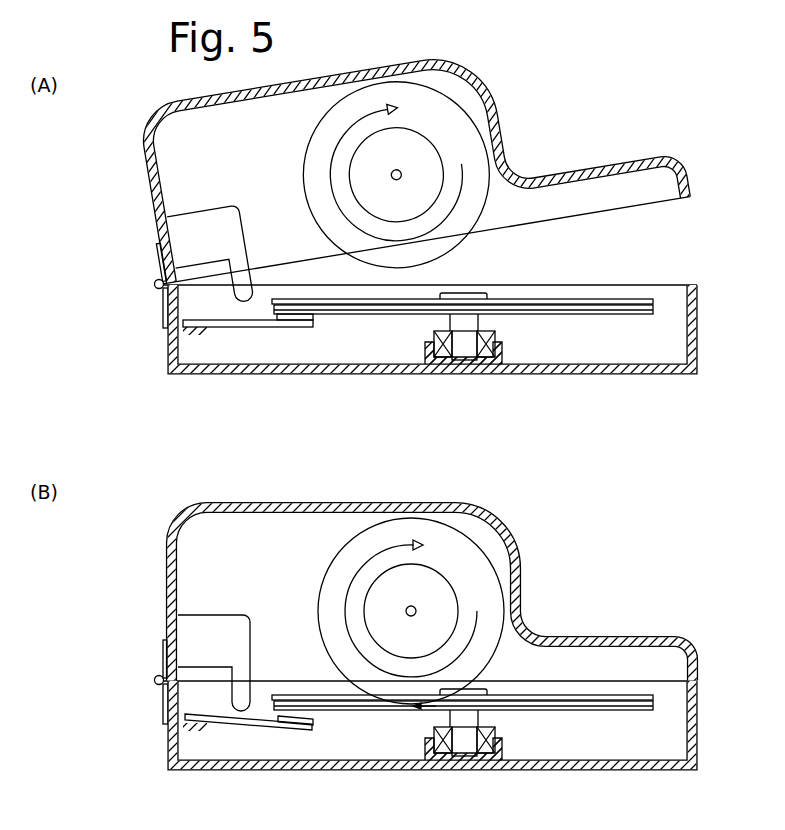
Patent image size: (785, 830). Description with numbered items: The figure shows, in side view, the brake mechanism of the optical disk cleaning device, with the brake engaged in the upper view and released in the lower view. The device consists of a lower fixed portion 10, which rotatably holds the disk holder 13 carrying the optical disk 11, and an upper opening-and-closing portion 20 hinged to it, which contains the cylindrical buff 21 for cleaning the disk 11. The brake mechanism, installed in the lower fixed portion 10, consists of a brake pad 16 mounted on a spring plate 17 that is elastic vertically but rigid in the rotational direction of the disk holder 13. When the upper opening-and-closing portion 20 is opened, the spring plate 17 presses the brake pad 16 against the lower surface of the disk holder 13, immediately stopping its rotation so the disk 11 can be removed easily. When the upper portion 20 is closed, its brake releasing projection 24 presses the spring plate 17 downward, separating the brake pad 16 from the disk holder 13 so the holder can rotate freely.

The lower fixed portion 10 is at (697, 287).
The optical disk 11 is at (587, 300).
The disk holder 13 is at (525, 313).
The brake pad 16 is at (290, 318).
The spring plate 17 is at (222, 325).
The upper opening-and-closing portion 20 is at (673, 156).
The buff 21 is at (452, 135).
The brake releasing projection 24 is at (195, 233).